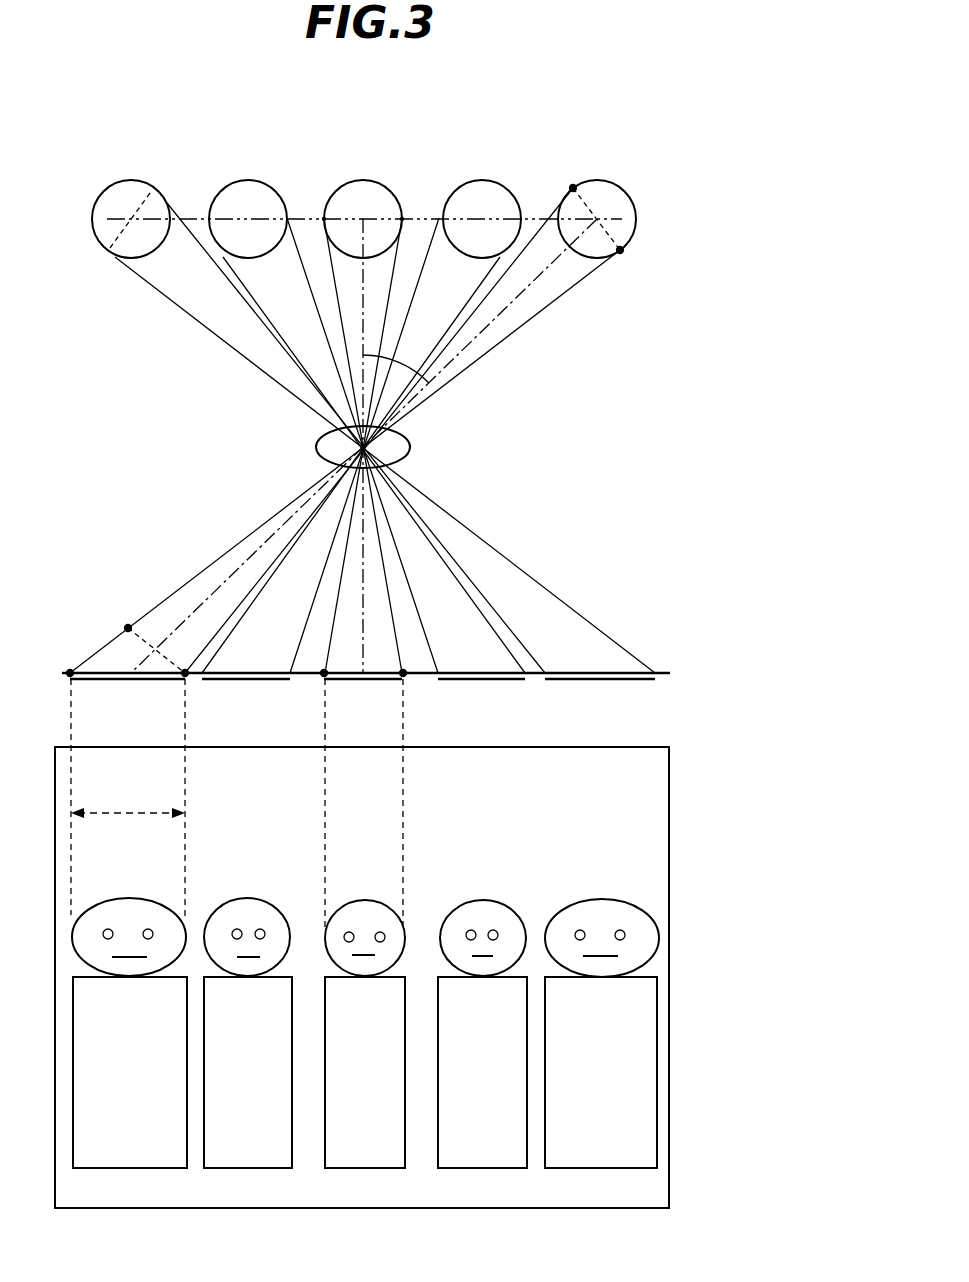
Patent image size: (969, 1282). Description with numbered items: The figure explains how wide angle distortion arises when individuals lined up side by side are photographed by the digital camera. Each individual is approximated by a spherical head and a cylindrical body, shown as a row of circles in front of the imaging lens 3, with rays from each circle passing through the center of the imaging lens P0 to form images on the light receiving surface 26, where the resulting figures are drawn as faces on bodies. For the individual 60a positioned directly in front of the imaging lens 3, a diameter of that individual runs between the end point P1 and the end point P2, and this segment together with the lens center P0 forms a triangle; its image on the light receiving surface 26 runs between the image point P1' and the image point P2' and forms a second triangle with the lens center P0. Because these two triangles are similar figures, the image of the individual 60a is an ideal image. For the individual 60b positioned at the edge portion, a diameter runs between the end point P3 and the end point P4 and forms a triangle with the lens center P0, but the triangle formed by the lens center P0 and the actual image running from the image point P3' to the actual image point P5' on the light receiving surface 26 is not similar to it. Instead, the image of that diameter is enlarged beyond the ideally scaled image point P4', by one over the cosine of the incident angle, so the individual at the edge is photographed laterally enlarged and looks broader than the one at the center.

The imaging lens 3 is at (410, 447).
The light receiving surface 26 is at (660, 672).
The individual 60a is at (364, 181).
The individual 60b is at (631, 193).
The center of the imaging lens P0 is at (365, 448).
The end point of segment P1P2 P1 is at (317, 182).
The end point of segment P1P2 P2 is at (420, 188).
The end point of segment P3P4 P3 is at (567, 153).
The end point of segment P3P4 P4 is at (641, 281).
The image point of P1 P1' is at (435, 697).
The image point of P2 P2' is at (298, 702).
The image point of P3 P3' is at (218, 697).
The ideally scaled image point P4' is at (145, 621).
The actual image point of P4 P5' is at (52, 648).